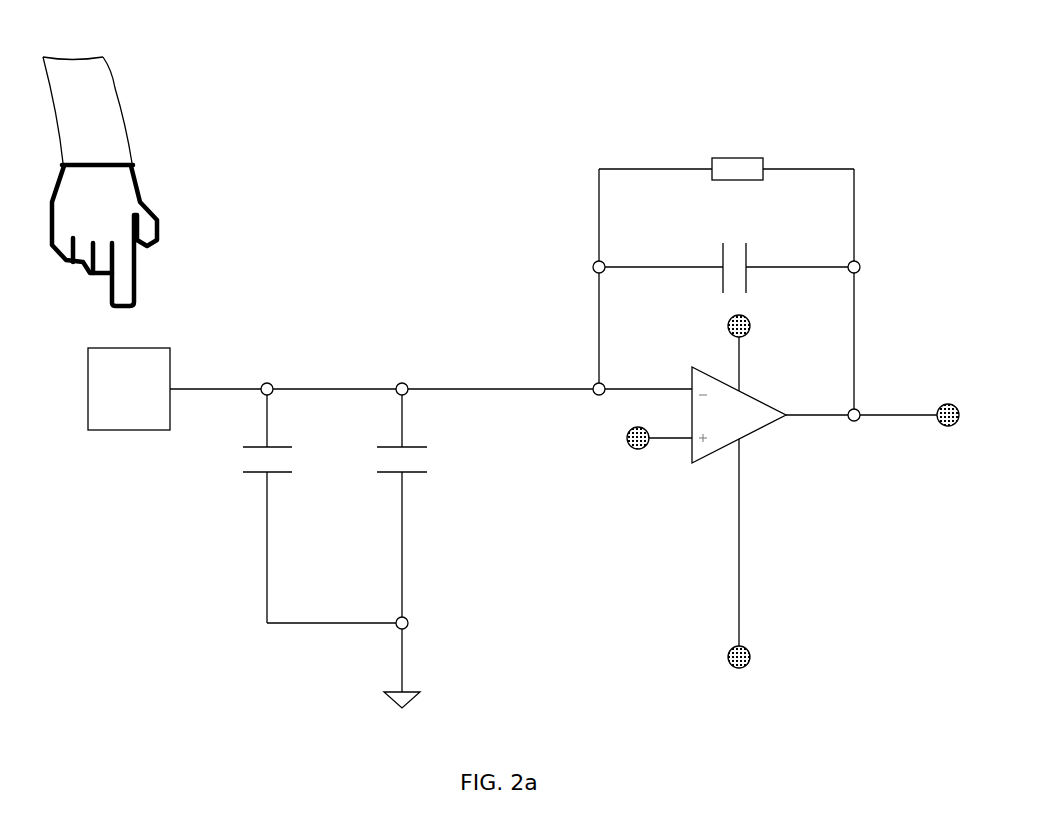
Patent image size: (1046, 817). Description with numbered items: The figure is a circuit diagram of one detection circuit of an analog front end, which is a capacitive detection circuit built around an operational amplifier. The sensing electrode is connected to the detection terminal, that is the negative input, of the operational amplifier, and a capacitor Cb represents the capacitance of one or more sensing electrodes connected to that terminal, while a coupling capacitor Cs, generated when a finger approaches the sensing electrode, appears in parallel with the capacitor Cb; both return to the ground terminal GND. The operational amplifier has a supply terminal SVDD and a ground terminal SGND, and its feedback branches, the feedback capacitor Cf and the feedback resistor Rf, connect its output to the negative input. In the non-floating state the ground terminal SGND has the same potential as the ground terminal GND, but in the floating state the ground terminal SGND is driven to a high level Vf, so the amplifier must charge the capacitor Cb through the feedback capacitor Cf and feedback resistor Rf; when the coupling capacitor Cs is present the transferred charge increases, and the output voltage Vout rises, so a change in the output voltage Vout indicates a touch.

The coupling capacitor Cs is at (252, 509).
The capacitor of sensing electrodes Cb is at (388, 506).
The feedback resistor Rf is at (726, 150).
The feedback capacitor Cf is at (726, 250).
The supply voltage terminal SVDD is at (707, 347).
The ground terminal of the operational amplifier SGND is at (744, 571).
The output voltage Vout is at (872, 402).
The ground terminal of the capacitor Cb GND is at (401, 683).